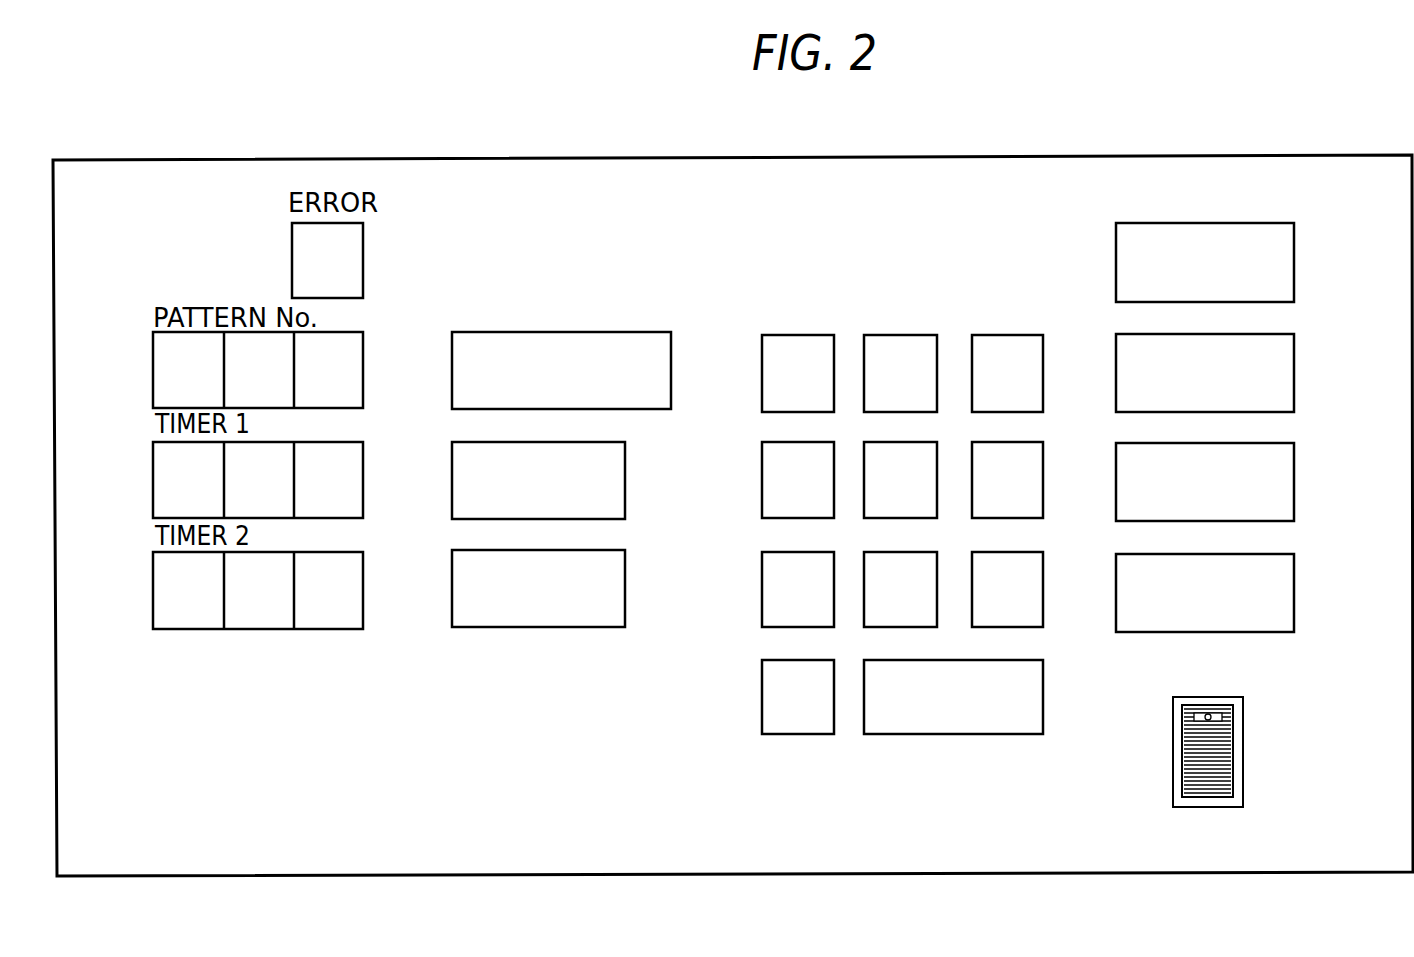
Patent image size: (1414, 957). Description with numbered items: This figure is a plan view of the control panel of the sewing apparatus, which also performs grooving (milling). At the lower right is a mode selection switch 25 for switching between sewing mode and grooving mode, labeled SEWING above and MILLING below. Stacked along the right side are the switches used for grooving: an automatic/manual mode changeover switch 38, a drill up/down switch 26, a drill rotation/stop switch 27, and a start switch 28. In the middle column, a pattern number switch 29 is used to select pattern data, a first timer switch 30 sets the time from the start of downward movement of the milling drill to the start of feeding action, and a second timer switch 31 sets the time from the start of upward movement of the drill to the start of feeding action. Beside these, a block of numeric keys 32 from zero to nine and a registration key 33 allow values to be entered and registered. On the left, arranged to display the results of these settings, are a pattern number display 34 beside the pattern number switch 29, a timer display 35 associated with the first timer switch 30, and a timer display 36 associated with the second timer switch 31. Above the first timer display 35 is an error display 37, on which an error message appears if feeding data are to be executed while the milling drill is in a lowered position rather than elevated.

The mode selection switch 25 is at (1276, 741).
The drill up/down switch 26 is at (1294, 373).
The drill rotation/stop switch 27 is at (1294, 485).
The start switch 28 is at (1294, 600).
The pattern number switch 29 is at (613, 332).
The first timer switch 30 is at (625, 483).
The second timer switch 31 is at (625, 592).
The numeric keys 32 is at (1040, 293).
The registration key 33 is at (955, 734).
The pattern number display 34 is at (153, 373).
The timer display 35 is at (153, 488).
The timer display 36 is at (153, 590).
The error display 37 is at (292, 265).
The automatic/manual mode changeover switch 38 is at (1294, 265).